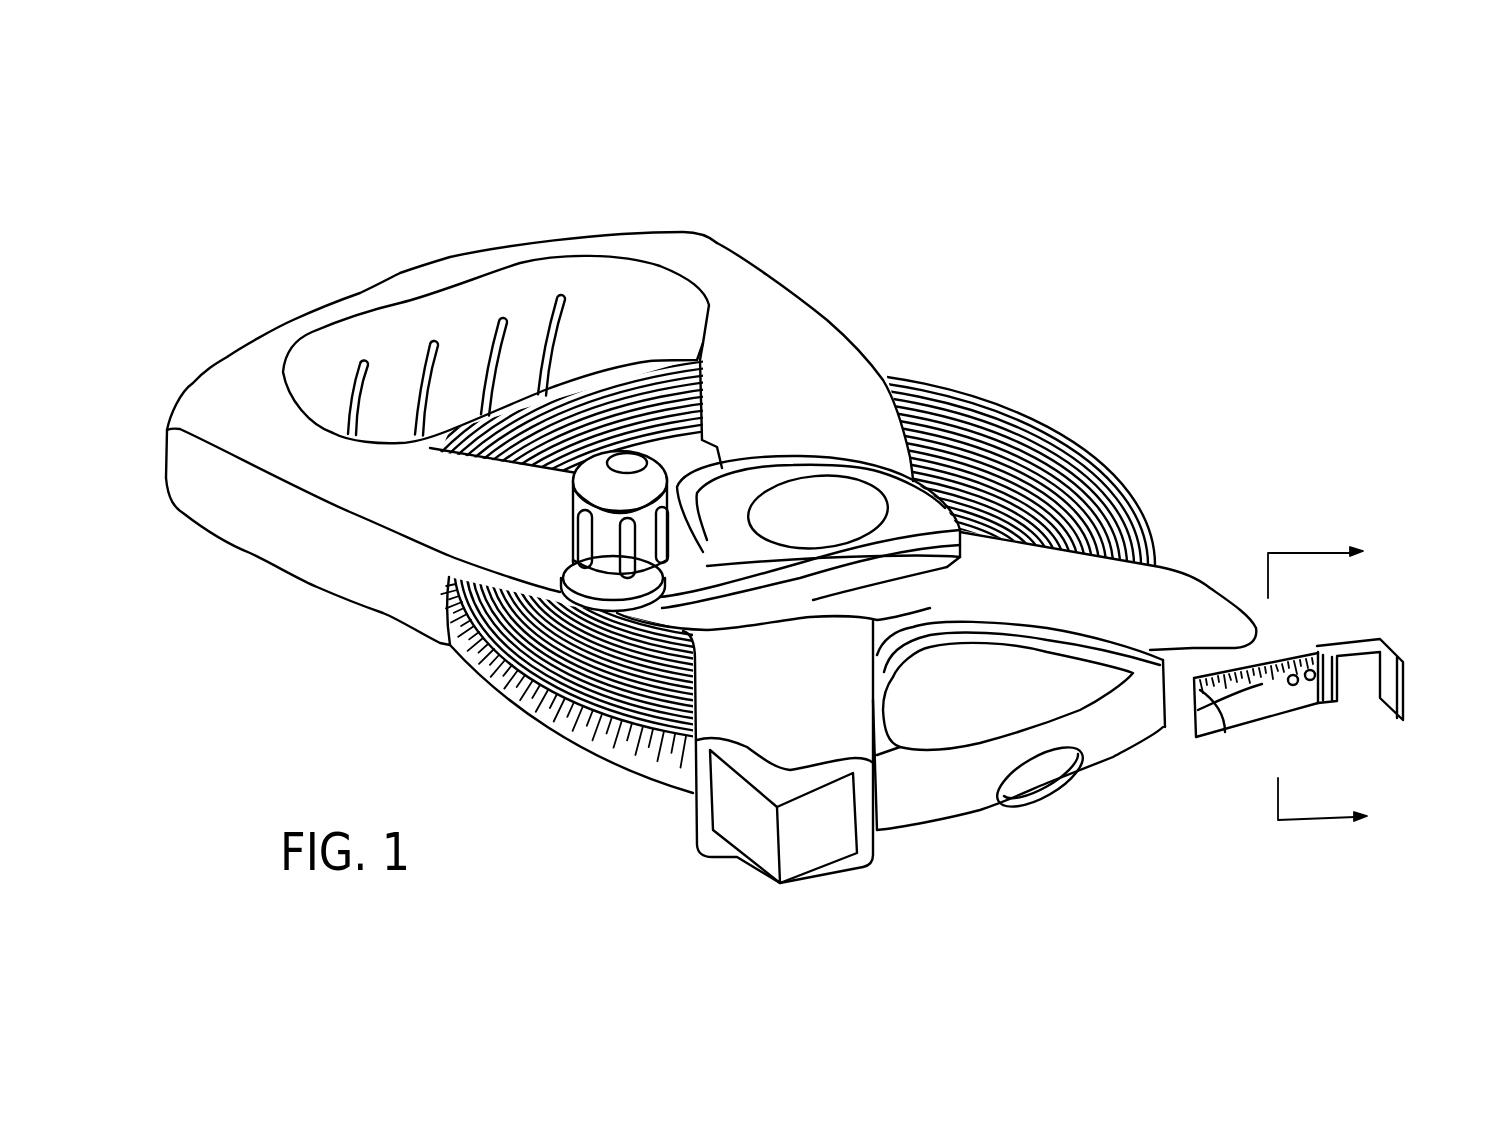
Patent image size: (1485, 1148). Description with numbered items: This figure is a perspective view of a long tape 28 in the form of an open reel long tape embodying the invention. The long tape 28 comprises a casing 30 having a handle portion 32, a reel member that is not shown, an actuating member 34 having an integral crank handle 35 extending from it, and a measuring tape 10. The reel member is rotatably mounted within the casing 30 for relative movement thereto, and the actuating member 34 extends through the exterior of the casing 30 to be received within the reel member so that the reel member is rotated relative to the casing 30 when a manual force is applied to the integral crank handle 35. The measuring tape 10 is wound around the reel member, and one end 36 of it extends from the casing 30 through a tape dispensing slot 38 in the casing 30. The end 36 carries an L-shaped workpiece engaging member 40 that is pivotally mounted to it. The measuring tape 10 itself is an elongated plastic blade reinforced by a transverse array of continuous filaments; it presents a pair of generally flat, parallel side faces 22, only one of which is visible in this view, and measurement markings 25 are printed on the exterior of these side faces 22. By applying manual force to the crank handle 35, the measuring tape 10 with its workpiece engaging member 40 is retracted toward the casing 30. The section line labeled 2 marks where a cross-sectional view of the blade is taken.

The measuring tape 10 is at (1100, 466).
The side faces 22 is at (1267, 685).
The measurement markings 25 is at (1303, 660).
The long tape 28 is at (798, 203).
The casing 30 is at (807, 335).
The handle portion 32 is at (528, 283).
The actuating member 34 is at (777, 630).
The crank handle 35 is at (597, 486).
The end 36 is at (1307, 693).
The tape dispensing slot 38 is at (1217, 707).
The workpiece engaging member 40 is at (1407, 688).
The section line 2- 2 is at (1336, 681).